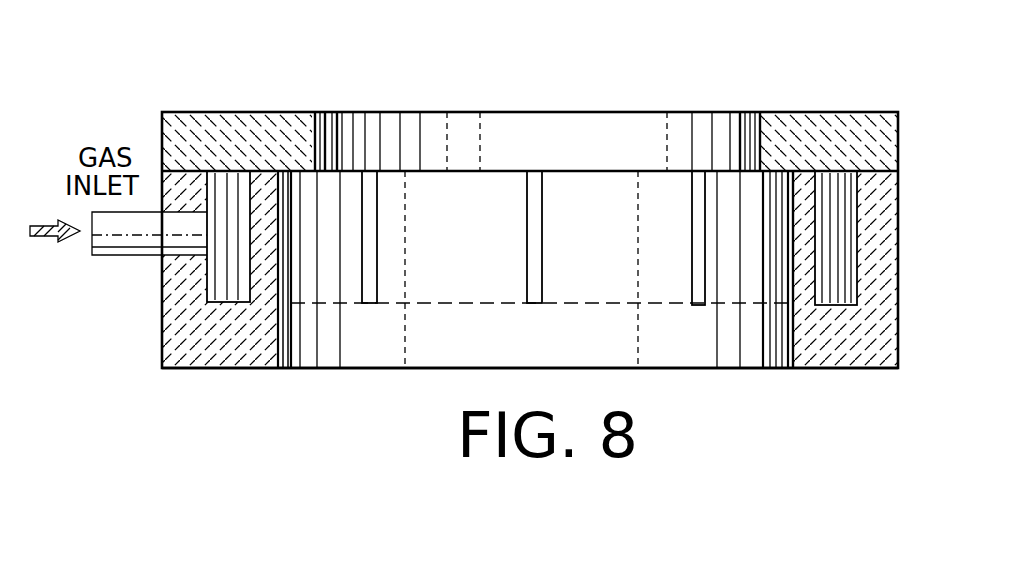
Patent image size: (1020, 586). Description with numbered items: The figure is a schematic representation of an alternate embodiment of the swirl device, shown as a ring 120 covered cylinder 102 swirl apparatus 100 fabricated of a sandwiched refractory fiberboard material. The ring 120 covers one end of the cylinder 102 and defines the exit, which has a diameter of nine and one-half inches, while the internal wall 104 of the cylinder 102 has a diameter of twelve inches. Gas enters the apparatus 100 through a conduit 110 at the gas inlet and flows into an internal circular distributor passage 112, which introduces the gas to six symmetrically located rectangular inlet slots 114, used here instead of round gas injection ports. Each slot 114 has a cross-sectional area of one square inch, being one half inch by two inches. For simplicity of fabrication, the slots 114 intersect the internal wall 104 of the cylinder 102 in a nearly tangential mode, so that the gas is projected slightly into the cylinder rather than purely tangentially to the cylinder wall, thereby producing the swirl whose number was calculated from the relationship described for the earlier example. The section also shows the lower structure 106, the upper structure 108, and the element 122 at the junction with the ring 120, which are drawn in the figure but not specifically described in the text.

The swirl apparatus 100 is at (143, 125).
The cylinder 102 is at (157, 317).
The internal wall 104 is at (323, 370).
The base plate 106 is at (250, 370).
The cover plate 108 is at (266, 156).
The conduit 110 is at (89, 257).
The internal circular distributor passage 112 is at (220, 288).
The rectangular inlet slots 114 is at (527, 251).
The ring 120 is at (796, 109).
The seal 122 is at (736, 124).